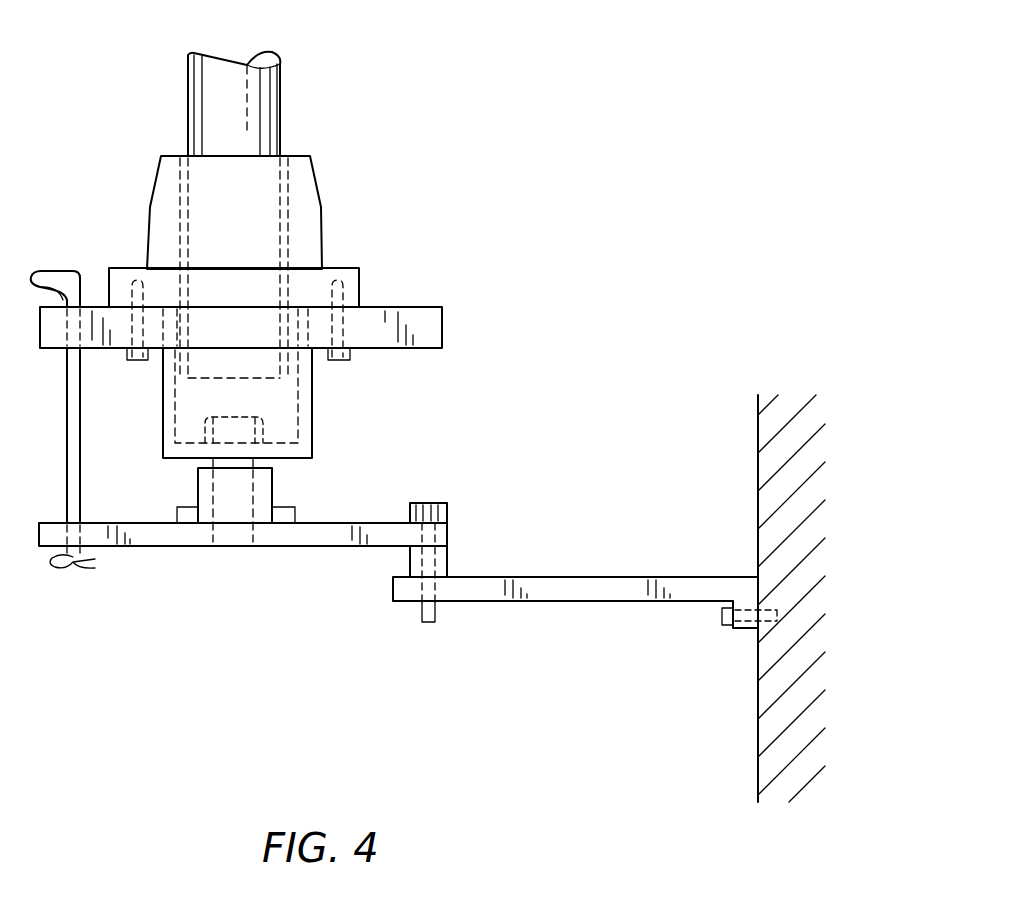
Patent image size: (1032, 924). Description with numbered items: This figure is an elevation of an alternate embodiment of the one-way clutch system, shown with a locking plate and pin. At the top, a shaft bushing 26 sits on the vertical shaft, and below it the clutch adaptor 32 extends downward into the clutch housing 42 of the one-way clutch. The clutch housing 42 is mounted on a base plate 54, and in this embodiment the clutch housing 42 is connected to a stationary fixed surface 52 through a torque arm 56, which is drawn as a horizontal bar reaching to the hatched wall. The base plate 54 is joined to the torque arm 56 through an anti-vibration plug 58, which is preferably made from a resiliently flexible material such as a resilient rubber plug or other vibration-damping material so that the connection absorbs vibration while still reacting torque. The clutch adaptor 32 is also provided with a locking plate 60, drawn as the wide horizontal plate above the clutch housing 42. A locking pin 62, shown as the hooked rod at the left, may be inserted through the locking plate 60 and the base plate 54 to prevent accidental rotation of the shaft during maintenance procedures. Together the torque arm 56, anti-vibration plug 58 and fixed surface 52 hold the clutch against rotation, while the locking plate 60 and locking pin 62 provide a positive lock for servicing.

The shaft bushing 26 is at (322, 207).
The clutch adaptor 32 is at (312, 402).
The clutch housing 42 is at (272, 485).
The fixed surface 52 is at (757, 690).
The base plate 54 is at (263, 547).
The torque arm 56 is at (602, 577).
The anti-vibration plug 58 is at (447, 558).
The locking plate 60 is at (442, 327).
The locking pin 62 is at (65, 448).